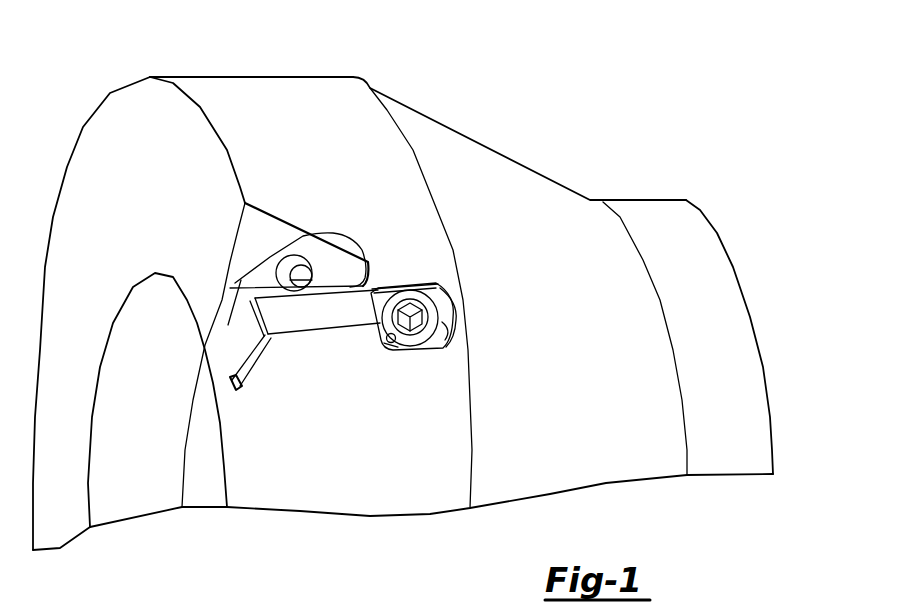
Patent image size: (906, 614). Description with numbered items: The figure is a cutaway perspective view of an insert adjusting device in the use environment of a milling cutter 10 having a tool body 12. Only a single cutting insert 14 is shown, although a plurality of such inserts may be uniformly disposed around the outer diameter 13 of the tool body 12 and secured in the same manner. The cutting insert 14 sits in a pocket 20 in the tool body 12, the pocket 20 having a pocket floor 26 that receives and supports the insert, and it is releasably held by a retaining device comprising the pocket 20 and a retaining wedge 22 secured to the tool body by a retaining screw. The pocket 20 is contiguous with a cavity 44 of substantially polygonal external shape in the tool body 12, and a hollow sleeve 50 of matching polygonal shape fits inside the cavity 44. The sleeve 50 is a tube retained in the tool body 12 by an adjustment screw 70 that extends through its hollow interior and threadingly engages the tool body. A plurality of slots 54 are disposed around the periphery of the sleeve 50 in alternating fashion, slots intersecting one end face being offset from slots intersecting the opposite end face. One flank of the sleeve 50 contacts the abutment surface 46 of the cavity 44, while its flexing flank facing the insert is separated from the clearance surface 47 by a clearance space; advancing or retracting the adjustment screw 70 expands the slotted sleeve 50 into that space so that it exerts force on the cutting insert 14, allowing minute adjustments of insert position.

The milling cutter 10 is at (403, 282).
The tool body 12 is at (545, 173).
The outer diameter 13 is at (283, 76).
The cutting insert 14 is at (234, 345).
The pocket 20 is at (230, 375).
The retaining wedge 22 is at (250, 270).
The pocket floor 26 is at (246, 371).
The cavity 44 is at (441, 300).
The abutment surface 46 is at (442, 350).
The clearance surface 47 is at (396, 342).
The hollow sleeve 50 is at (426, 280).
The slots 54 is at (404, 285).
The adjustment screw 70 is at (434, 290).